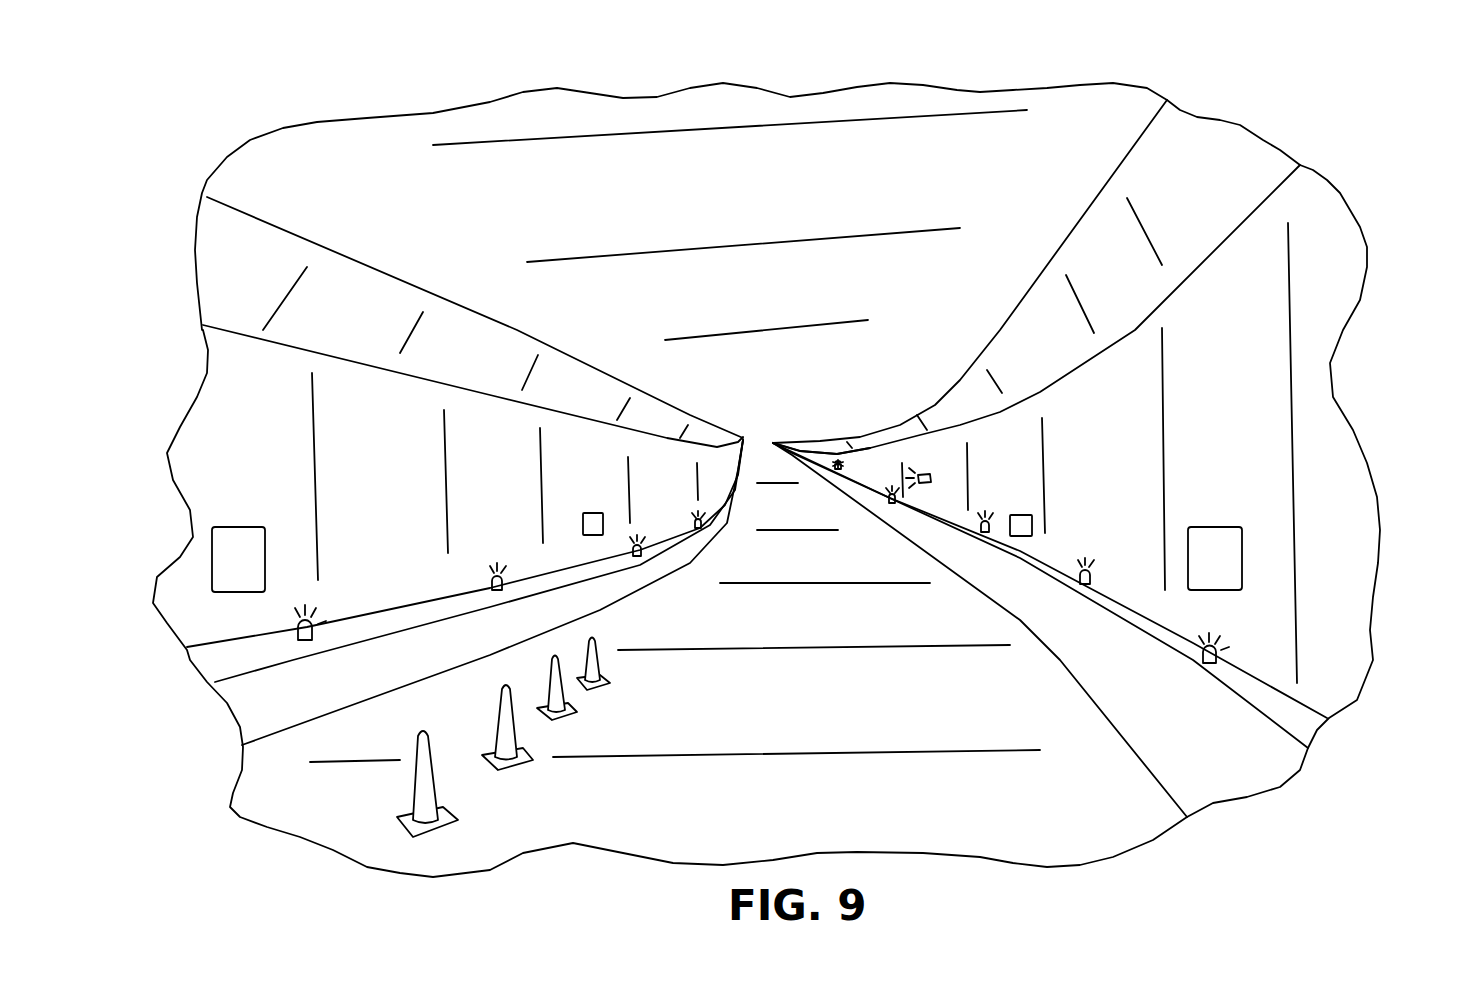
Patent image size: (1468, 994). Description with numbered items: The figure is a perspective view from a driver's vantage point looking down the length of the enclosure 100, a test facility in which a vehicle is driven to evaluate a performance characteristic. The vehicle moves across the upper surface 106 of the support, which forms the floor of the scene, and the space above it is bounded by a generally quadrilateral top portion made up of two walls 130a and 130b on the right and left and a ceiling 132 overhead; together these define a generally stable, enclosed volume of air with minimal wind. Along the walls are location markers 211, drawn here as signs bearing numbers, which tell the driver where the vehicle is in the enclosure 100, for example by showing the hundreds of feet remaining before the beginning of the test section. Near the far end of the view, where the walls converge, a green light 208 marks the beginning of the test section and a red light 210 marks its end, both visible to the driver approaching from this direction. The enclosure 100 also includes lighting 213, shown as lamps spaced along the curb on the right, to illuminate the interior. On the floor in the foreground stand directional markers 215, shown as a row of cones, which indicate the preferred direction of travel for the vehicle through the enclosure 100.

The enclosure 100 is at (267, 115).
The upper surface 106 is at (918, 819).
The ceiling 132 is at (775, 211).
The wall 130a is at (1317, 245).
The wall 130b is at (230, 408).
The green light 208 is at (916, 495).
The red light 210 is at (837, 450).
The location markers 211 is at (224, 524).
The lighting 213 is at (1186, 659).
The directional markers 215 is at (624, 673).